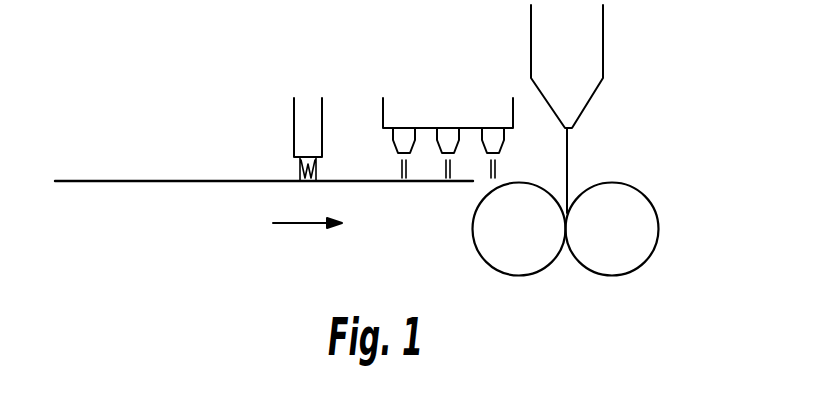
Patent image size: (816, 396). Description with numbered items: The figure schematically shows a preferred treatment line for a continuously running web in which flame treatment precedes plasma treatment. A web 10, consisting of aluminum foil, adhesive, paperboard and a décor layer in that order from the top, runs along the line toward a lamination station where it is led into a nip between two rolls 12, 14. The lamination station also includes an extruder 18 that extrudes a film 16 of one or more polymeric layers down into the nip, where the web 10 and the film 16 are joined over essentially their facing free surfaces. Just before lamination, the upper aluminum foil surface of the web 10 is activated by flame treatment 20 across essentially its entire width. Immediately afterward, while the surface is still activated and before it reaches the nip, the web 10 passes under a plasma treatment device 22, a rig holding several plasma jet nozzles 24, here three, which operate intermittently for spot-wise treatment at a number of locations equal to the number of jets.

The web 10 is at (137, 182).
The roll 12 is at (490, 247).
The roll 14 is at (637, 230).
The film 16 is at (572, 158).
The extruder 18 is at (585, 50).
The flame treatment 20 is at (310, 108).
The plasma treatment device 22 is at (447, 110).
The plasma jet nozzles 24 is at (398, 137).